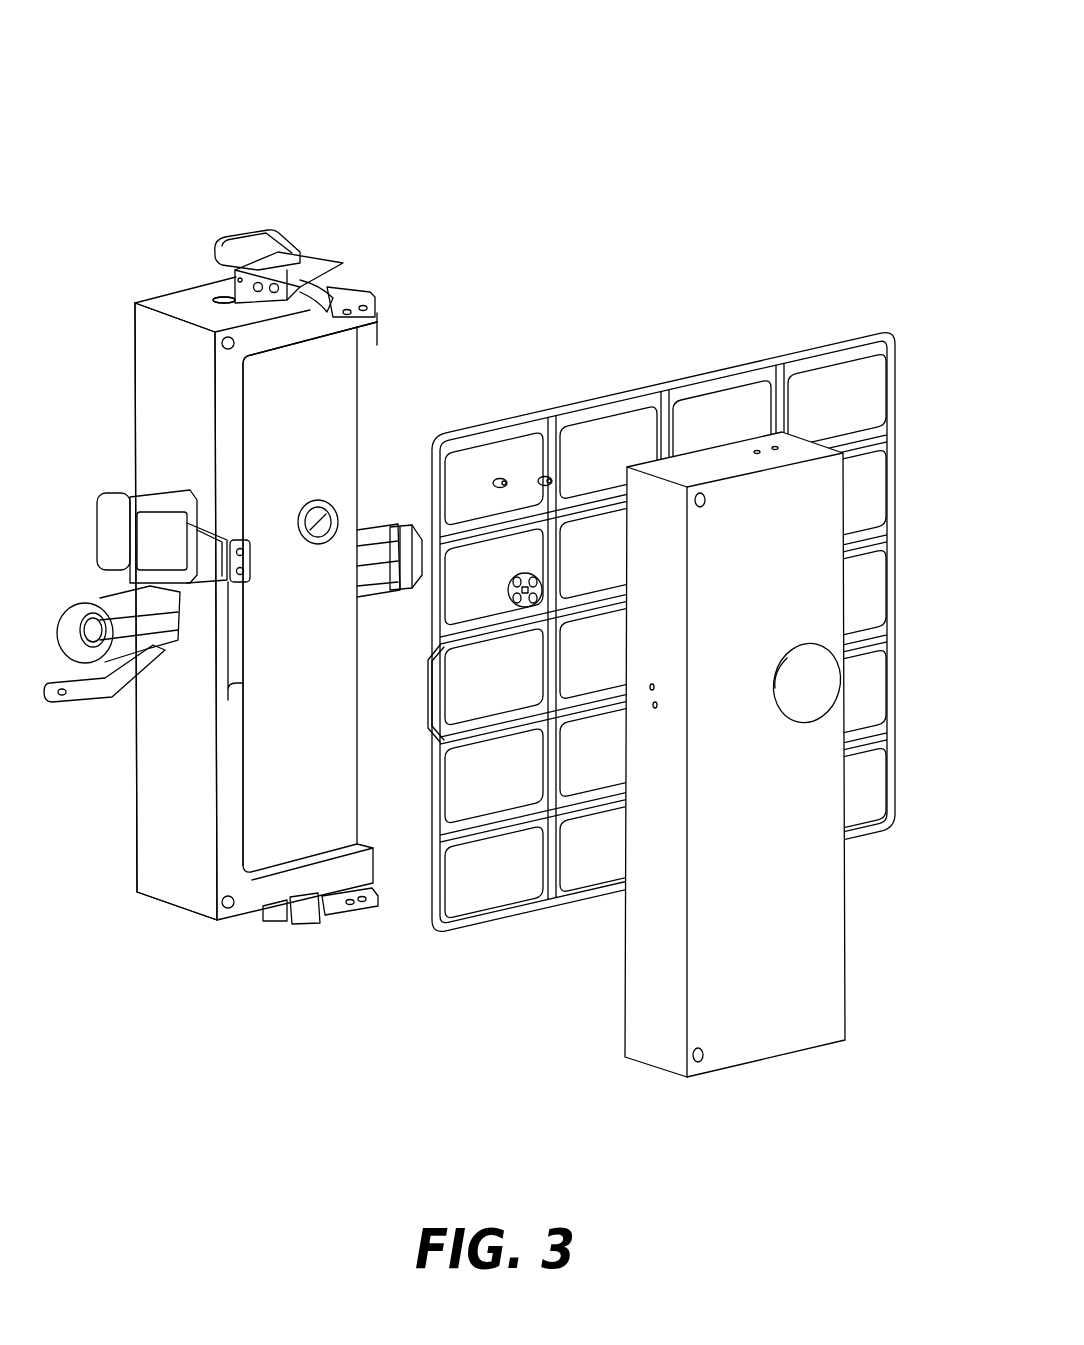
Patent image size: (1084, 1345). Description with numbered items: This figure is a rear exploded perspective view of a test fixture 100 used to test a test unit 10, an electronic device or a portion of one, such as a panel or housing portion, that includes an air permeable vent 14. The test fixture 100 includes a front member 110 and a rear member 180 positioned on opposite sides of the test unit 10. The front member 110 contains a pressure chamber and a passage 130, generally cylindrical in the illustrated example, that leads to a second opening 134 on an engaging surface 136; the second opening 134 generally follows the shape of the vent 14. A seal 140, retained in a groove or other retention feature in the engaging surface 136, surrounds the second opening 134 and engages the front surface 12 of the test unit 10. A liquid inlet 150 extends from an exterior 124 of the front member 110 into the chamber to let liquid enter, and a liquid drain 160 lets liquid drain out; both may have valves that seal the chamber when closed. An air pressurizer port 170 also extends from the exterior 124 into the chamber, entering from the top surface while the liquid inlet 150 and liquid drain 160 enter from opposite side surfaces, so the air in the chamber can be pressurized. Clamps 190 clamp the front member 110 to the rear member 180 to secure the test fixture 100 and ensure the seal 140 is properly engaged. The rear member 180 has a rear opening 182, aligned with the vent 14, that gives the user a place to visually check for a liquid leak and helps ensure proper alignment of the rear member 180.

The test fixture 100 is at (147, 103).
The test unit 10 is at (840, 372).
The front surface 12 is at (535, 537).
The air permeable vent 14 is at (513, 583).
The front member 110 is at (208, 892).
The exterior 124 is at (147, 808).
The passage 130 is at (327, 503).
The second opening 134 is at (298, 527).
The engaging surface 136 is at (337, 407).
The seal 140 is at (217, 530).
The liquid inlet 150 is at (130, 627).
The liquid drain 160 is at (377, 550).
The air pressurizer port 170 is at (222, 298).
The rear member 180 is at (660, 1032).
The rear opening 182 is at (808, 690).
The clamps 190 is at (300, 265).